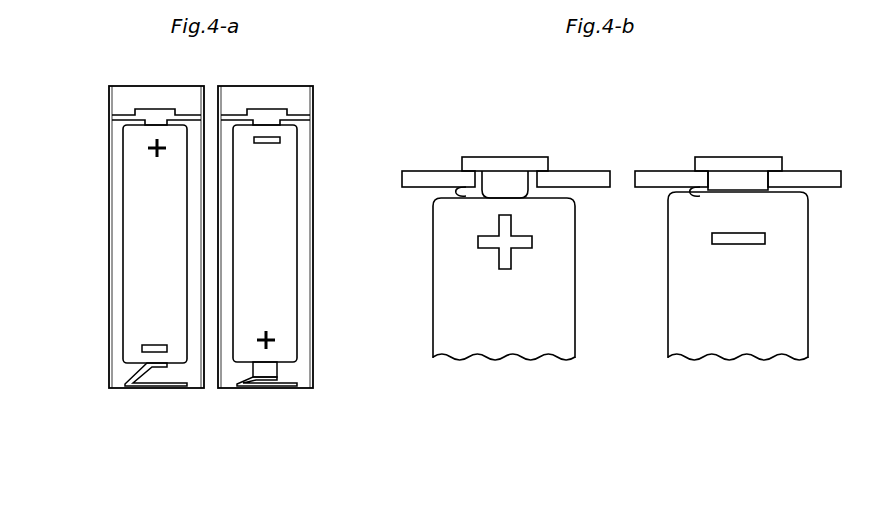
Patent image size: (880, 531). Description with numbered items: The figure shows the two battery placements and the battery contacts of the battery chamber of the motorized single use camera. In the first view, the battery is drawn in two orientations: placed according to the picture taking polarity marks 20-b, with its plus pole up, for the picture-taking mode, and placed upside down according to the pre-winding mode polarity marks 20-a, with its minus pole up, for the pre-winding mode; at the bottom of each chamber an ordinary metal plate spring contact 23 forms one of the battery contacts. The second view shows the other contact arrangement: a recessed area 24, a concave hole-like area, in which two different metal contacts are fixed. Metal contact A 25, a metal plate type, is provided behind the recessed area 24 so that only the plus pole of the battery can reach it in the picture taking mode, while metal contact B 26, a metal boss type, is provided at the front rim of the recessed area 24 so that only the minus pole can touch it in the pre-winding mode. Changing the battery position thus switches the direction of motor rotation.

In FIG. 4A, the pre-winding mode polarity marks 20-a is at (310, 178).
In FIG. 4A, the picture taking polarity marks 20-b is at (118, 173).
In FIG. 4A, the metal plate spring contact 23 is at (153, 386).
In FIG. 4B, the recessed area 24 is at (748, 183).
In FIG. 4B, the metal contact A 25 is at (503, 162).
In FIG. 4B, the metal contact B 26 is at (458, 191).